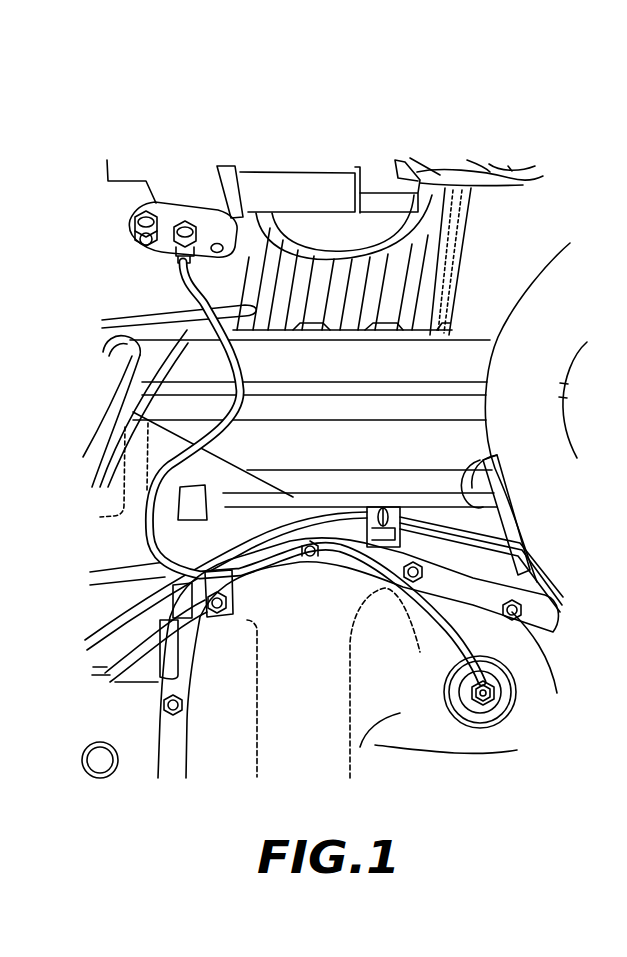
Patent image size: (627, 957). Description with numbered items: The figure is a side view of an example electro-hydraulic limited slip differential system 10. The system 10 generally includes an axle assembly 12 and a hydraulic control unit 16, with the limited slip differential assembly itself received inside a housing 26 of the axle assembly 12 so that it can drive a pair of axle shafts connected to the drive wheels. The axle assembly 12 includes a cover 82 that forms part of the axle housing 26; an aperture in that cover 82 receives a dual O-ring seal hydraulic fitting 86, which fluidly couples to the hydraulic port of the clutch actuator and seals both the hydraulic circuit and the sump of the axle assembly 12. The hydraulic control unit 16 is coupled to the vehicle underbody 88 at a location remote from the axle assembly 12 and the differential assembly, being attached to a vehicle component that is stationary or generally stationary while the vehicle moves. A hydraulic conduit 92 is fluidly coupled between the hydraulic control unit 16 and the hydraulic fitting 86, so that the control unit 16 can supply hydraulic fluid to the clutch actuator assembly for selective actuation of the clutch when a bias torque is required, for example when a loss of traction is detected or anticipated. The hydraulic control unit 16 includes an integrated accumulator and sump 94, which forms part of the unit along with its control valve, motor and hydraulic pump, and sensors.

The electro-hydraulic limited slip differential system 10 is at (483, 92).
The axle assembly 12 is at (120, 775).
The hydraulic control unit 16 is at (207, 168).
The housing 26 is at (200, 768).
The cover 82 is at (310, 743).
The dual O-ring seal hydraulic fitting 86 is at (502, 714).
The vehicle underbody 88 is at (424, 270).
The hydraulic conduit 92 is at (157, 541).
The integrated accumulator and sump 94 is at (434, 174).